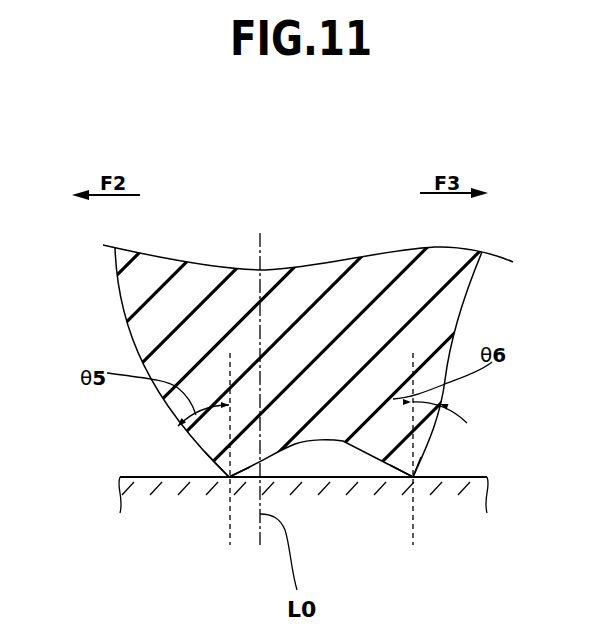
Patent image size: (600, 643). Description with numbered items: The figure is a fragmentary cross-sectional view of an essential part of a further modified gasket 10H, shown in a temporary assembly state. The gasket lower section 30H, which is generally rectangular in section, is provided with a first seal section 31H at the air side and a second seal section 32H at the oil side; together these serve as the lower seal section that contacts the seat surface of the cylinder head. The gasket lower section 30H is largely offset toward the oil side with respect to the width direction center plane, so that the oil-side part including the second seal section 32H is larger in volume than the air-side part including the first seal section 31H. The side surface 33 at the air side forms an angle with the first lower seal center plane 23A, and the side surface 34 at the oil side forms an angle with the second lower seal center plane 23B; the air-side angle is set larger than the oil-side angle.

The gasket 10H is at (178, 221).
The gasket lower section 30H is at (280, 300).
The first seal section 31H is at (225, 480).
The second seal section 32H is at (410, 480).
The side surface 33 is at (173, 398).
The side surface 34 is at (430, 440).
The first lower seal center plane 23A is at (230, 523).
The second lower seal center plane 23B is at (413, 525).